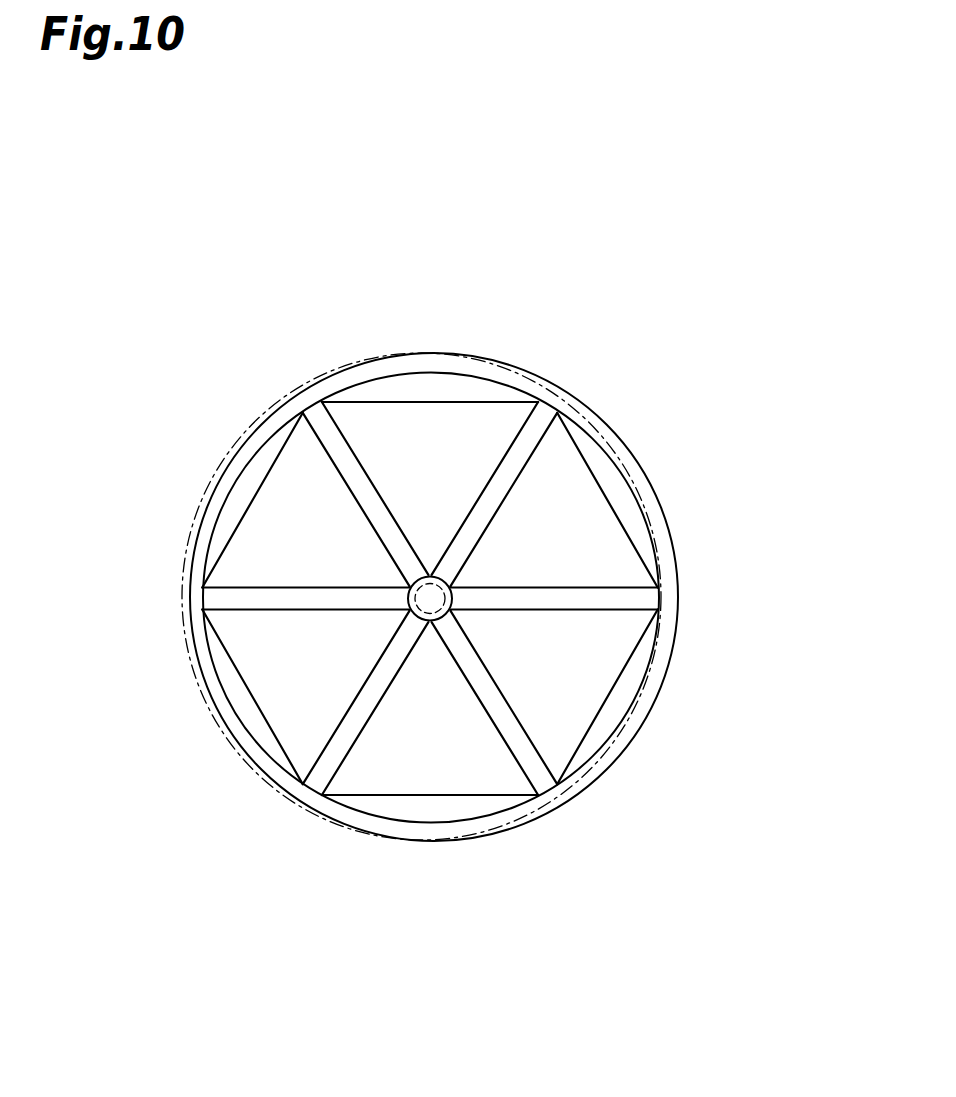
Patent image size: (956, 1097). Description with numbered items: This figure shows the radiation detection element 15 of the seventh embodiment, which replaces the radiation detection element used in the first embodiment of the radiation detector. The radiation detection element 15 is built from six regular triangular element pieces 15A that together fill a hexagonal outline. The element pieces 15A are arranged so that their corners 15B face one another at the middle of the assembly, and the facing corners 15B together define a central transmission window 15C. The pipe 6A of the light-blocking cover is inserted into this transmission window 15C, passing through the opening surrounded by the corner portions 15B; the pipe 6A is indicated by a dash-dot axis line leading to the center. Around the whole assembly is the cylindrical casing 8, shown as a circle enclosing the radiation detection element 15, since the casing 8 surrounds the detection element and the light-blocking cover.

The radiation detection element 15 is at (385, 400).
The element piece 15A is at (427, 438).
The corner 15B is at (432, 528).
The transmission window 15C is at (430, 599).
The pipe 6A is at (418, 580).
The casing 8 is at (526, 366).